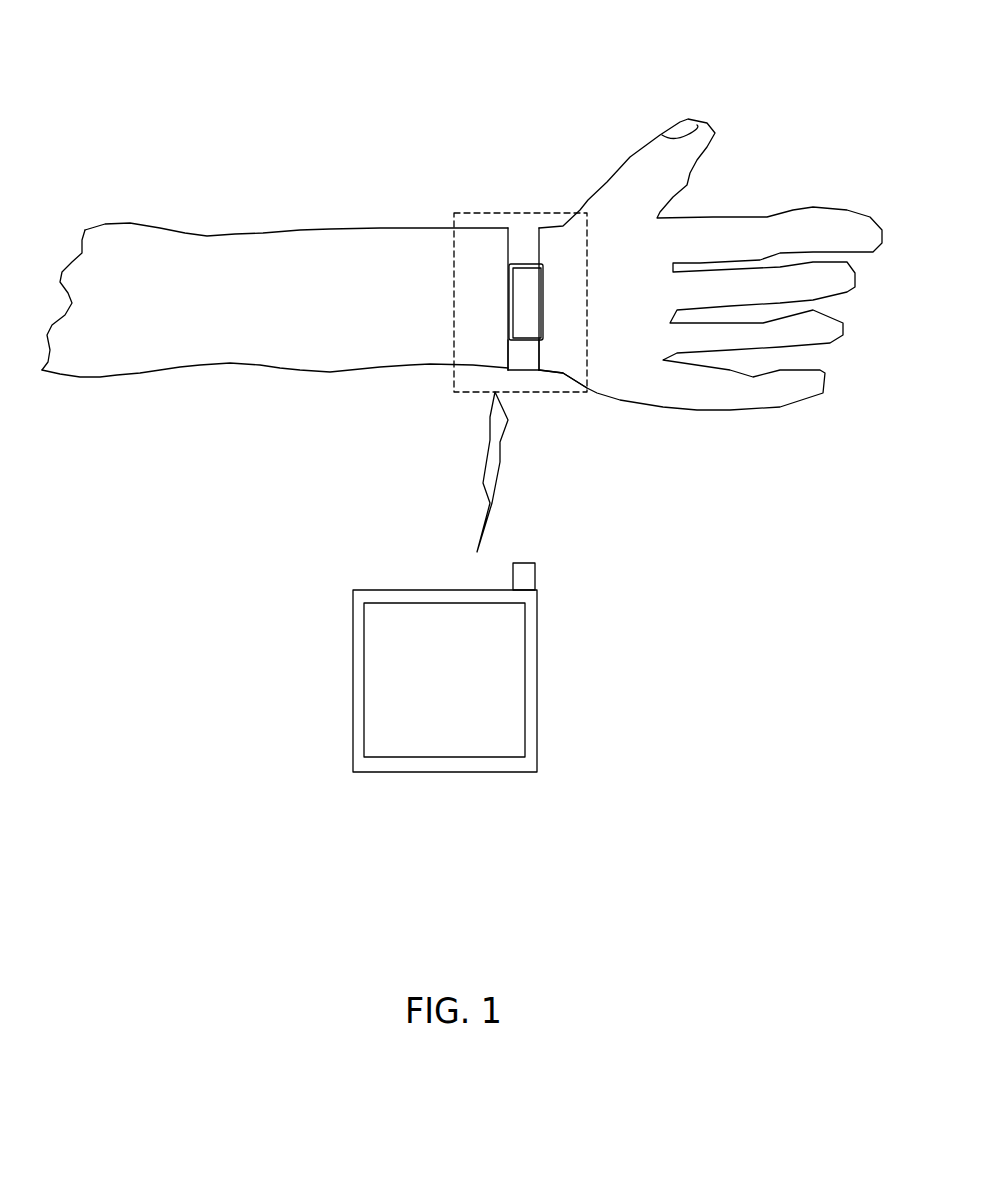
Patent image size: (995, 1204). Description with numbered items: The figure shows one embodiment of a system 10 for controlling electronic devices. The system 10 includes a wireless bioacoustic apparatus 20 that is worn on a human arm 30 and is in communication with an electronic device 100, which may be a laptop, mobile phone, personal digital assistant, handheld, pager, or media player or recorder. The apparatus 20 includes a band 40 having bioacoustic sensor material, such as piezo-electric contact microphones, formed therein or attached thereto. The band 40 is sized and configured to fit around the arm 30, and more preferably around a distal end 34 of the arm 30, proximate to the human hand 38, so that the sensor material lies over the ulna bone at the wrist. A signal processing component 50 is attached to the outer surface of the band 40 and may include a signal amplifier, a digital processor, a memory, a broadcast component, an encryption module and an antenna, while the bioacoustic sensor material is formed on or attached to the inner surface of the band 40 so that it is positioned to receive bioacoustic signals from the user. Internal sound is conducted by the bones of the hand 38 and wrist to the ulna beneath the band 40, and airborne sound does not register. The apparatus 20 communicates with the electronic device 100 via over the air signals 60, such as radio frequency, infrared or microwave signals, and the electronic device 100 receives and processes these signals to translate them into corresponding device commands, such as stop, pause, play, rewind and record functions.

The system 10 is at (486, 81).
The wireless bioacoustic apparatus 20 is at (538, 228).
The human arm 30 is at (237, 345).
The distal end of human arm 34 is at (600, 410).
The human hand 38 is at (620, 345).
The band 40 is at (525, 357).
The signal processing component 50 is at (528, 262).
The over the air signals 60 is at (502, 442).
The electronic device 100 is at (537, 733).